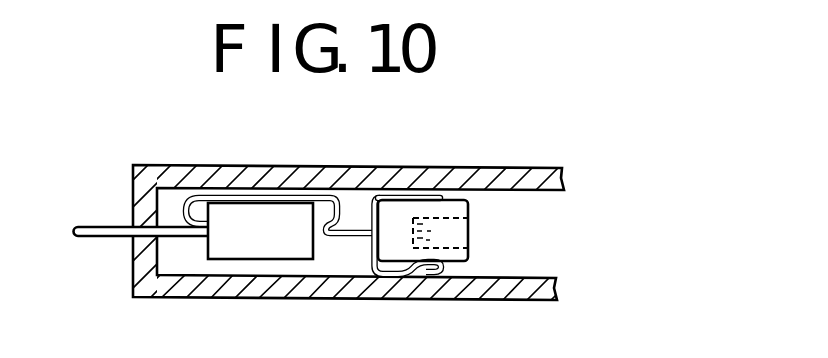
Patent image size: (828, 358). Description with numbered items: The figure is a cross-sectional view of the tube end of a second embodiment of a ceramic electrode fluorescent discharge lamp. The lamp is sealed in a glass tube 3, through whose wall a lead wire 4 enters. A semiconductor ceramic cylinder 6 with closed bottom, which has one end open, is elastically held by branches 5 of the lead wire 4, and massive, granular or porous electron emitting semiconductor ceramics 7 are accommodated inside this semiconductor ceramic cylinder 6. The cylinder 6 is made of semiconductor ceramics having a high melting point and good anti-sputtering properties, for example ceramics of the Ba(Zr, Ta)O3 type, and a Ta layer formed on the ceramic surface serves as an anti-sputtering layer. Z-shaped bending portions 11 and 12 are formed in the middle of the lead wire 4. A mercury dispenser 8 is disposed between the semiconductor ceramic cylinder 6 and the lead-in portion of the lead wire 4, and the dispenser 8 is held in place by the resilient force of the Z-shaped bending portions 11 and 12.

The glass tube 3 is at (392, 172).
The lead wire 4 is at (93, 239).
The branches of lead wire 5 is at (435, 190).
The semiconductor ceramic cylinder with closed bottom 6 is at (447, 254).
The electron emitting semiconductor ceramics 7 is at (432, 228).
The mercury dispenser 8 is at (267, 240).
The Z-shaped bending portion 11 is at (203, 239).
The Z-shaped bending portion 12 is at (320, 242).